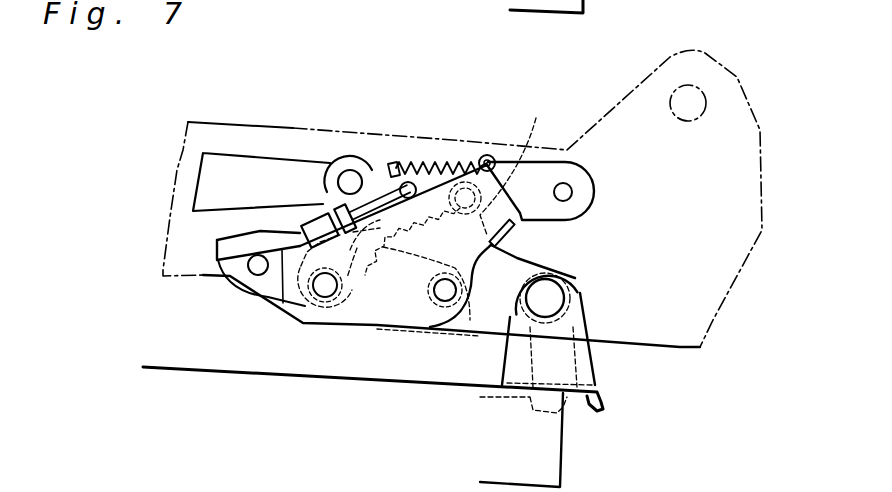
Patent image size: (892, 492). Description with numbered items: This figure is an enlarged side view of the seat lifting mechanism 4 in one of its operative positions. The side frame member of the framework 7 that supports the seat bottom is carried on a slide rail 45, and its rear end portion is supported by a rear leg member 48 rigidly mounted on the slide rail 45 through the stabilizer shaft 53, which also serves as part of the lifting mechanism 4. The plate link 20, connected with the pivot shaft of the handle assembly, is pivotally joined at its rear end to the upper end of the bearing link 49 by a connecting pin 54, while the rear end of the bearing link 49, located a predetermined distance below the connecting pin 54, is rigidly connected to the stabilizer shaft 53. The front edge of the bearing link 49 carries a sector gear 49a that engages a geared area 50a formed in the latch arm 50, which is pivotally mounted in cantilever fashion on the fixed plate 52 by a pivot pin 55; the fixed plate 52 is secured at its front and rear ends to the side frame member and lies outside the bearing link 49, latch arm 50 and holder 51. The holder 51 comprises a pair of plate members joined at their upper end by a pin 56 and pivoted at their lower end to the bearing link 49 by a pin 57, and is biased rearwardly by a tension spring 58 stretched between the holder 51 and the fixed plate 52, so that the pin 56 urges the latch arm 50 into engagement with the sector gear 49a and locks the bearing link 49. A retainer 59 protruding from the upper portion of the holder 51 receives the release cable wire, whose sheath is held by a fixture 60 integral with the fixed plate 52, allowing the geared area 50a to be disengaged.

The lifting mechanism 4 is at (423, 133).
The framework 7 is at (204, 277).
The plate link 20 is at (205, 163).
The slide rail 45 is at (563, 438).
The rear leg member 48 is at (593, 353).
The bearing link 49 is at (513, 262).
The sector gear 49a is at (370, 298).
The latch arm 50 is at (332, 314).
The geared area 50a is at (325, 222).
The holder 51 is at (410, 268).
The fixed plate 52 is at (580, 176).
The stabilizer shaft 53 is at (550, 295).
The connecting pin 54 is at (536, 118).
The pivot pin 55 is at (310, 283).
The pin 56 is at (350, 170).
The pin 57 is at (449, 302).
The tension spring 58 is at (486, 154).
The retainer 59 is at (406, 182).
The fixture 60 is at (326, 180).